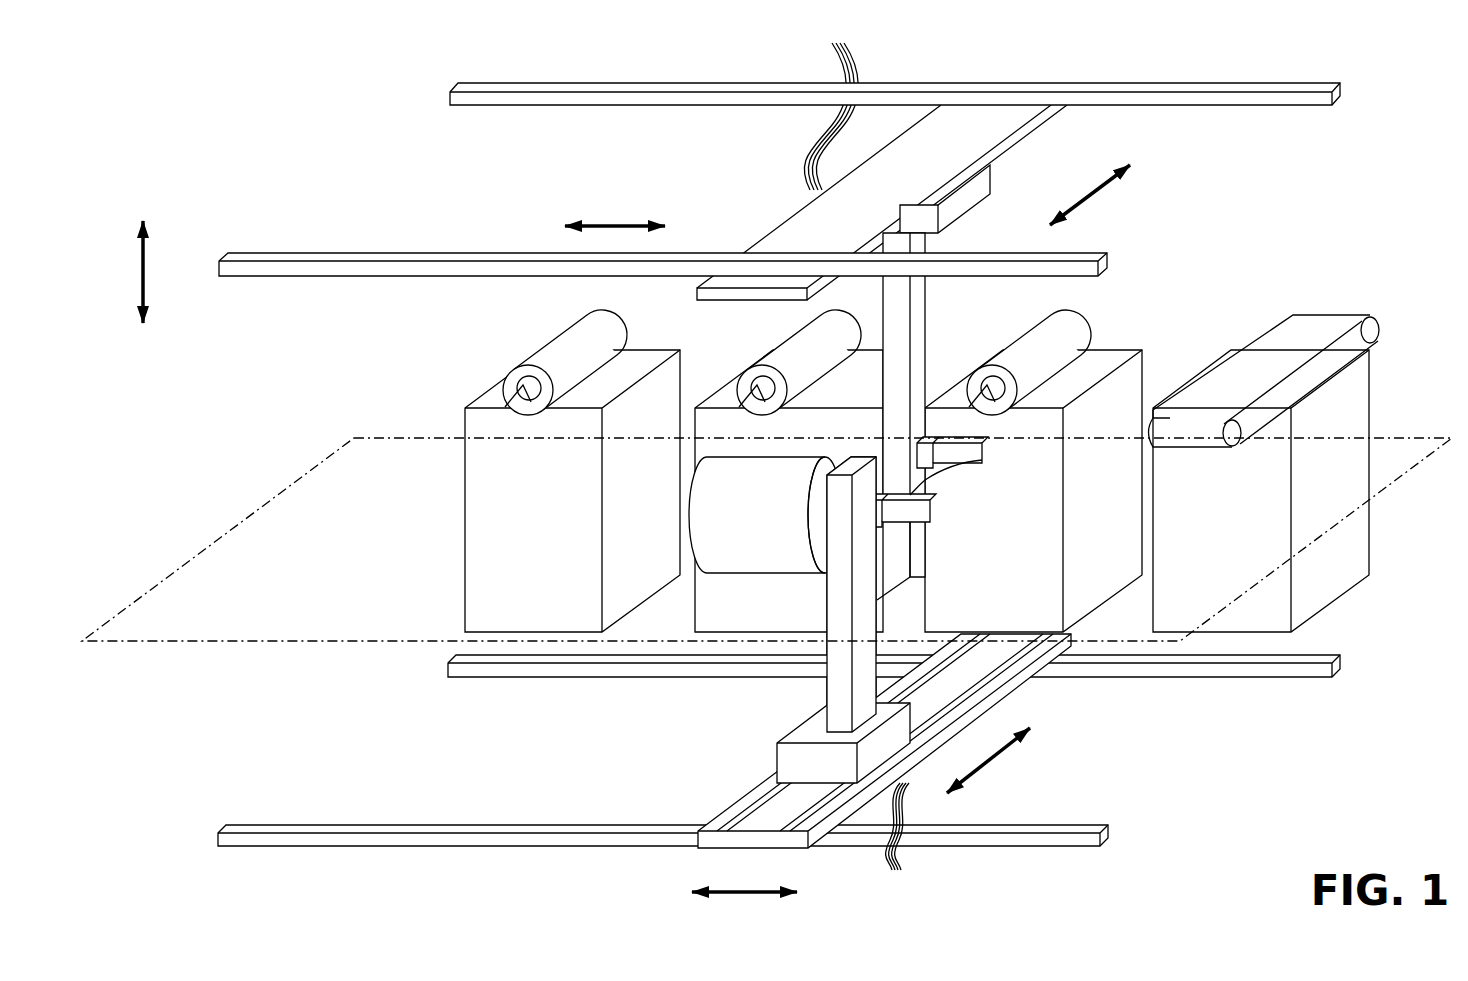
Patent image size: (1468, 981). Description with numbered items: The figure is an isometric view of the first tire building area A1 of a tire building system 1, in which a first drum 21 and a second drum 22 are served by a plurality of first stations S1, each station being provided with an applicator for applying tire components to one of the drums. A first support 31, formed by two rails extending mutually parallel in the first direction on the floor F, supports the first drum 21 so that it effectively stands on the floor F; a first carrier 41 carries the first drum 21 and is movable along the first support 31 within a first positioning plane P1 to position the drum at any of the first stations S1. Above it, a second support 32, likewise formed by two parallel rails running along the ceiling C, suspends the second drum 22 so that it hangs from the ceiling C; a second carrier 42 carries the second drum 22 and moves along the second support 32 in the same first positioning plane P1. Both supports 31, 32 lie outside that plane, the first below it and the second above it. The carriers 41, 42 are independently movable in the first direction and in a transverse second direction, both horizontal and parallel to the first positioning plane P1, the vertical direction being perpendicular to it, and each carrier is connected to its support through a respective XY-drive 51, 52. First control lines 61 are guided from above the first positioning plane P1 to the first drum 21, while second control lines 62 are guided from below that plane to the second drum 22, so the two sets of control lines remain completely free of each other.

The tire building system 1 is at (767, 478).
The first drum 21 is at (745, 557).
The second drum 22 is at (817, 423).
The first support 31 is at (357, 827).
The second support 32 is at (525, 100).
The first carrier 41 is at (872, 612).
The second carrier 42 is at (925, 415).
The XY-drive 51 is at (745, 769).
The XY-drive 52 is at (1062, 152).
The first control lines 61 is at (902, 857).
The second control lines 62 is at (790, 145).
The first stations S1 is at (703, 607).
The first positioning plane P1 is at (148, 643).
The first tire building area A1 is at (237, 402).
The ceiling C is at (1274, 62).
The floor F is at (1227, 807).